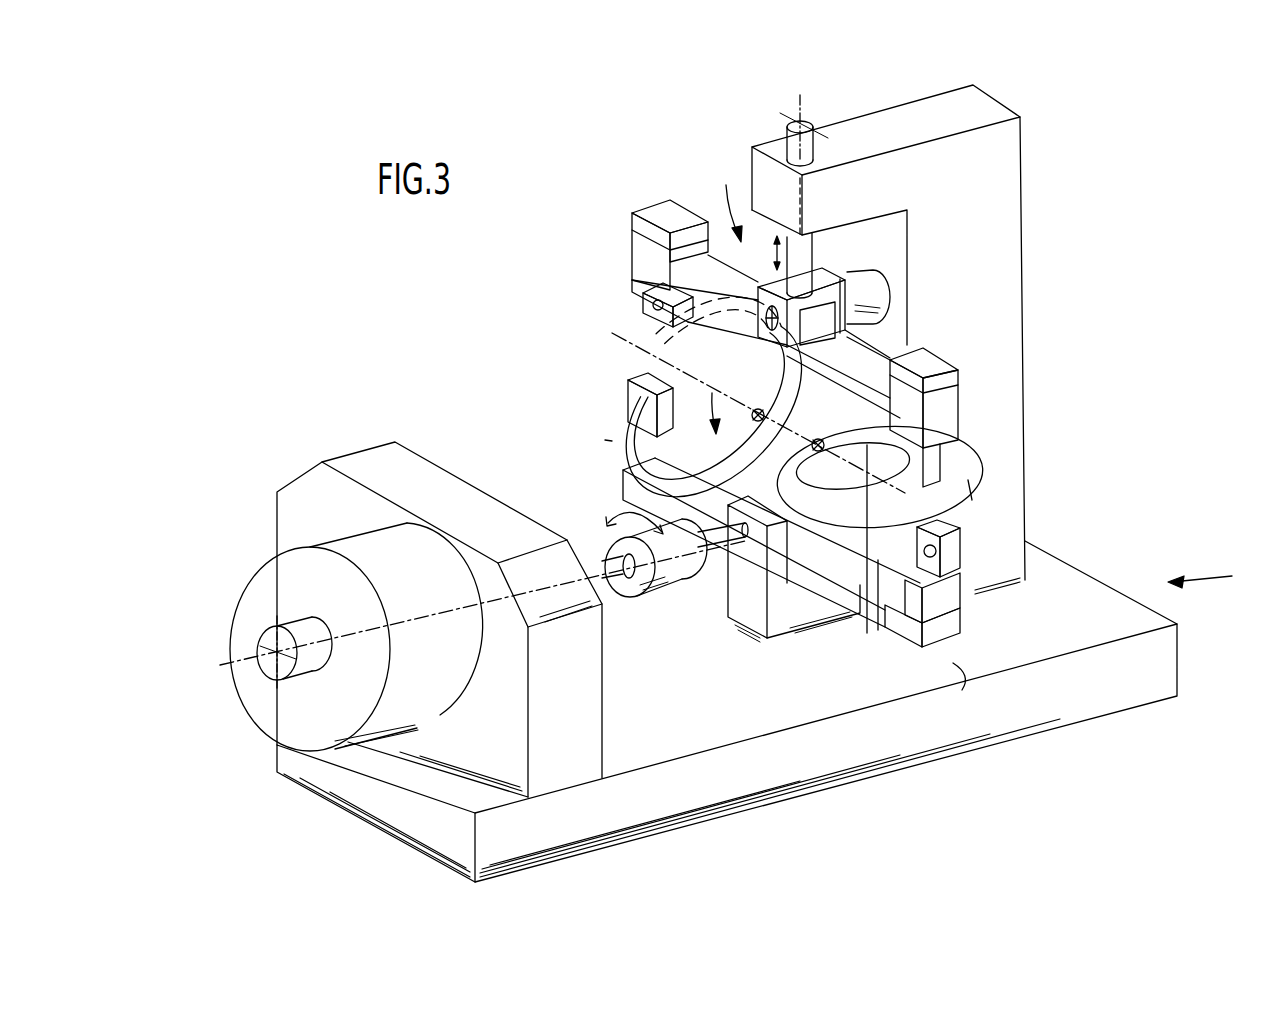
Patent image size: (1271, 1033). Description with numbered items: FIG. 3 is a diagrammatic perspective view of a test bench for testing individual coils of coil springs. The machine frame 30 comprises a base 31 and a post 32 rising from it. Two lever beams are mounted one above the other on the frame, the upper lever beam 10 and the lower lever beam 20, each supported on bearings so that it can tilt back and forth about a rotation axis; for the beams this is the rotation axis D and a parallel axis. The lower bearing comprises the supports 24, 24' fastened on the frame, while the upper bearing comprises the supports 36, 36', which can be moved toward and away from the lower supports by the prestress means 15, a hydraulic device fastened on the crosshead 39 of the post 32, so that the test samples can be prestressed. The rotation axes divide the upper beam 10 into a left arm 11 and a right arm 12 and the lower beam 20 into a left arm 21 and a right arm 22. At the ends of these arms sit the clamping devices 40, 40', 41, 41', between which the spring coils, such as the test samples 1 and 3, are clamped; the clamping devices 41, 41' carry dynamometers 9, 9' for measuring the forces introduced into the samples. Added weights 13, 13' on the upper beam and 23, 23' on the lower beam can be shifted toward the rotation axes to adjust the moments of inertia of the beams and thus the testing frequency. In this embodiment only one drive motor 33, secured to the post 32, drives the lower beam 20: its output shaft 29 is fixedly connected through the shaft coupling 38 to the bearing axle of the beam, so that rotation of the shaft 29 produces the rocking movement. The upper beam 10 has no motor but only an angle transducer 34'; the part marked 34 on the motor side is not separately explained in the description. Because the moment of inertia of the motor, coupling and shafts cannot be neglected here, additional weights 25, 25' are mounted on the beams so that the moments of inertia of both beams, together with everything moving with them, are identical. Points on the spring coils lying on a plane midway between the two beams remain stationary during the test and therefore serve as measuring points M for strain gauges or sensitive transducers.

The test sample 1 is at (605, 441).
The test sample 3 is at (968, 472).
The dynamometer 9 is at (695, 397).
The dynamometer 9' is at (954, 599).
The upper lever beam 10 is at (725, 196).
The left arm 11 is at (705, 277).
The right arm 12 is at (808, 350).
The added weight 13 is at (641, 247).
The added weight 13' is at (956, 423).
The prestress means 15 is at (810, 252).
The lower lever beam 20 is at (712, 397).
The left arm 21 is at (710, 505).
The right arm 22 is at (963, 603).
The added weight 23 is at (753, 573).
The added weight 23' is at (957, 694).
The support 24 is at (794, 585).
The support 24' is at (864, 559).
The weight 25 is at (652, 206).
The weight 25' is at (943, 356).
The output shaft 29 is at (727, 548).
The machine frame 30 is at (1213, 575).
The base 31 is at (1160, 682).
The post 32 is at (503, 739).
The drive motor 33 is at (272, 597).
The shaft bore 34 is at (262, 653).
The angle transducer 34' is at (894, 276).
The support 36 is at (850, 317).
The support 36' is at (737, 334).
The shaft coupling 38 is at (662, 576).
The crosshead 39 is at (850, 133).
The clamping device 40 is at (630, 305).
The clamping device 40' is at (997, 500).
The clamping device 41 is at (625, 395).
The clamping device 41' is at (958, 550).
The rotation axis D is at (254, 661).
The measuring point M is at (766, 416).